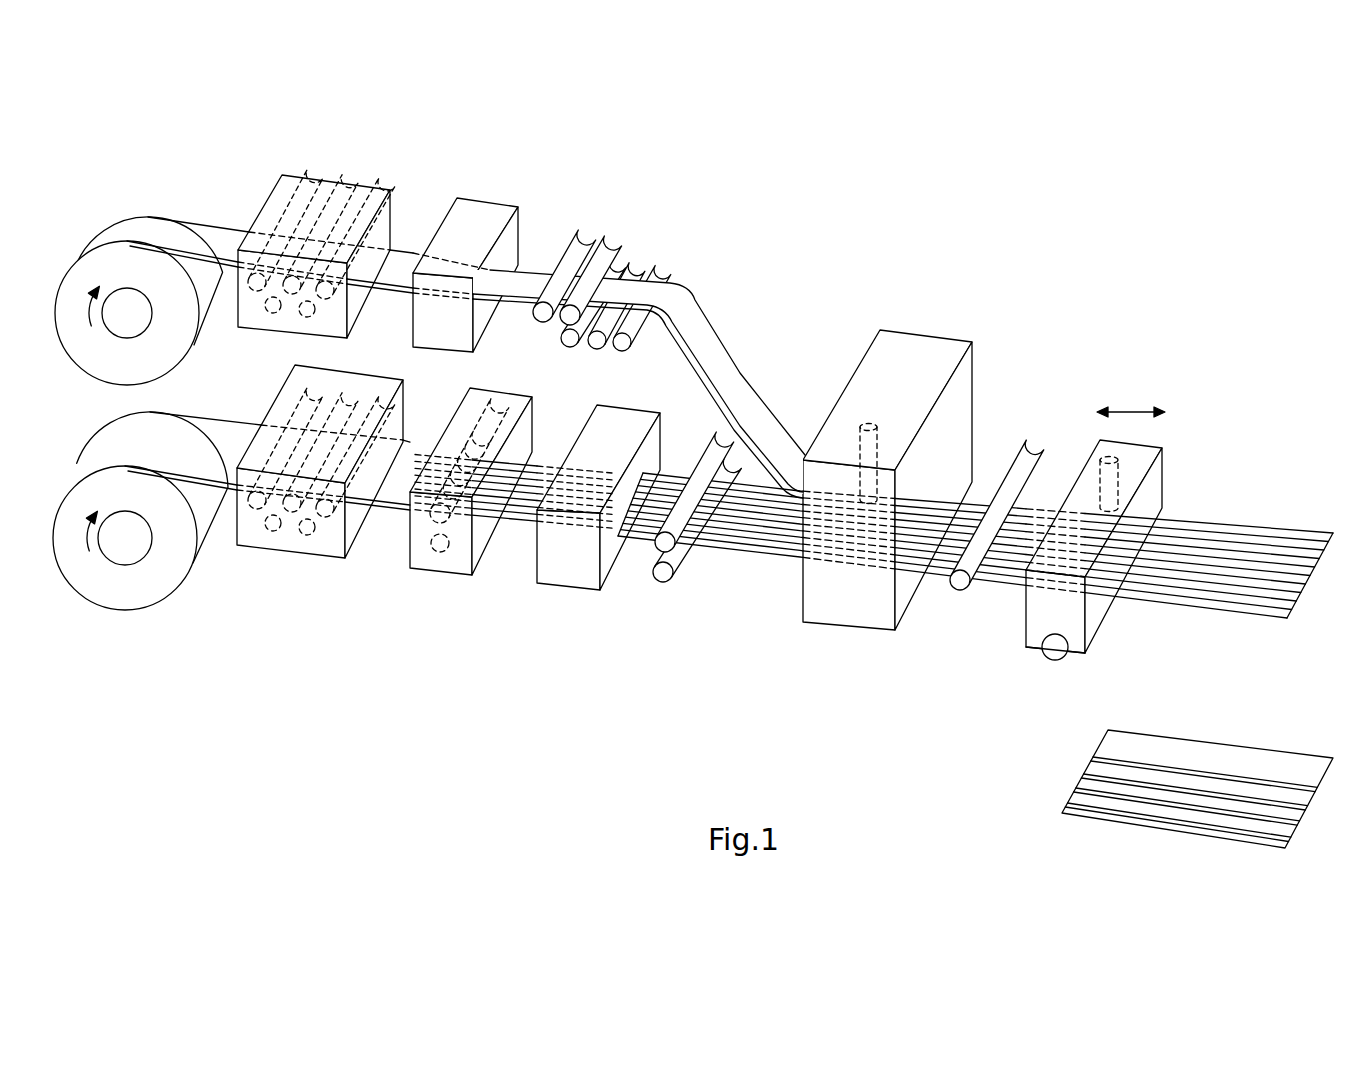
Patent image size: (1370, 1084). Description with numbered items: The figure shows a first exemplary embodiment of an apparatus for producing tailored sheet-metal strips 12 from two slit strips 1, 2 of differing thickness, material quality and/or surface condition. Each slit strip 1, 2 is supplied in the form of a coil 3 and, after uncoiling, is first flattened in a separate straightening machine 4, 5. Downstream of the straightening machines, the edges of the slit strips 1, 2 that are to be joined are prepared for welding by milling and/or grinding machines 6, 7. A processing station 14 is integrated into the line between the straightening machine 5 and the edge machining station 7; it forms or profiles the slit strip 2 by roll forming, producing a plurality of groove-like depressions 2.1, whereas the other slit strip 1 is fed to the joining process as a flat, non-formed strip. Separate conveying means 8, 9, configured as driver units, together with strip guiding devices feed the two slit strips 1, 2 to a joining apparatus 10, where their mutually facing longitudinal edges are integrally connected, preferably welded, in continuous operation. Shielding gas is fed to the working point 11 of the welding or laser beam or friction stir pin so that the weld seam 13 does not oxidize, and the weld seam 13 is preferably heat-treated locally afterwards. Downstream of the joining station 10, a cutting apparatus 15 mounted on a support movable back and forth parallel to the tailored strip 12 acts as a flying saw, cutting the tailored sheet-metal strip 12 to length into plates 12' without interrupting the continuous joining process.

The slit strip 1 is at (216, 240).
The slit strip 2 is at (222, 428).
The groove-like depression 2.1 is at (540, 490).
The coil 3 is at (108, 376).
The straightening machine 4 is at (337, 192).
The straightening machine 5 is at (290, 546).
The milling and/or grinding machine 6 is at (490, 213).
The milling and/or grinding machine 7 is at (577, 578).
The conveying means 8 is at (634, 238).
The conveying means 9 is at (673, 595).
The joining apparatus 10 is at (874, 352).
The working point 11 is at (877, 498).
The tailored sheet-metal strip 12 is at (1095, 511).
The plate 12' is at (1197, 757).
The weld seam 13 is at (976, 512).
The processing station 14 is at (451, 566).
The cutting apparatus 15 is at (1037, 622).